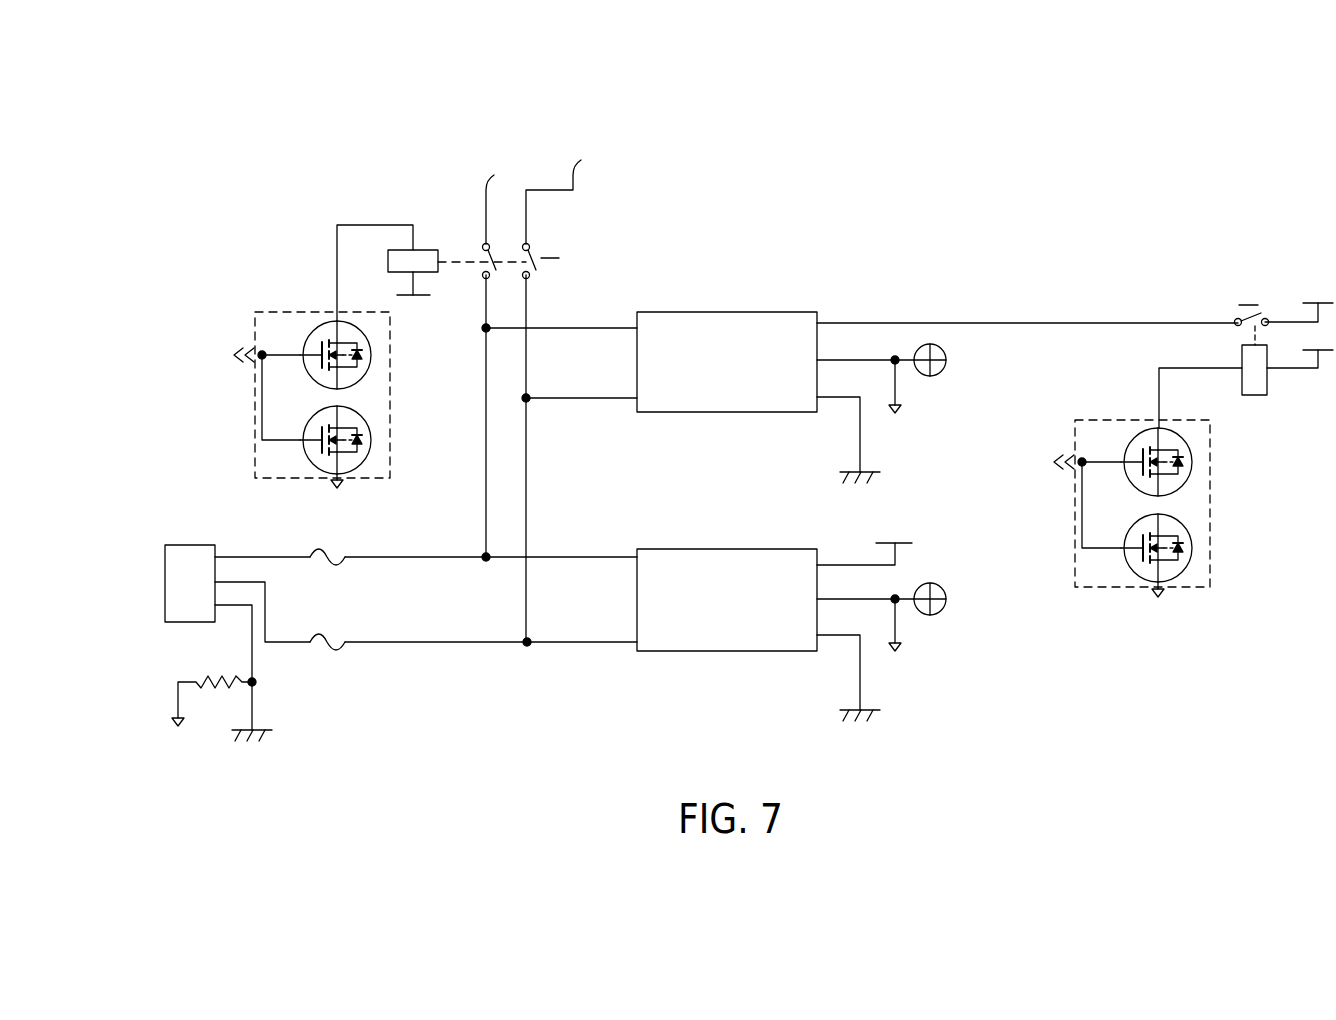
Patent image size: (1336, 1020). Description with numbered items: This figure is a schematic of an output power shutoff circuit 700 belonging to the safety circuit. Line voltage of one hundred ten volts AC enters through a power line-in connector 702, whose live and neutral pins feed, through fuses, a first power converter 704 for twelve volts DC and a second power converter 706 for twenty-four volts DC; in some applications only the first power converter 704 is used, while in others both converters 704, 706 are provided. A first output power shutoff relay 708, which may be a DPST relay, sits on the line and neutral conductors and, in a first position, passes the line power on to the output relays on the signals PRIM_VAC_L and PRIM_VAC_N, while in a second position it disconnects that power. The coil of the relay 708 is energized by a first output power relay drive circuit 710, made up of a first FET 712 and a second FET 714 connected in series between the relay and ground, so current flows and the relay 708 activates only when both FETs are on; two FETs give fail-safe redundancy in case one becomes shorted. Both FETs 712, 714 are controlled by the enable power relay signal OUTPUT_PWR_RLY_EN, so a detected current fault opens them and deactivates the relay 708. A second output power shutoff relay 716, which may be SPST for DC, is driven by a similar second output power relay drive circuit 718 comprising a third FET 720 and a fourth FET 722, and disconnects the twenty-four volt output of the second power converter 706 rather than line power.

The output power shutoff circuit 700 is at (606, 700).
The power line-in connector 702 is at (190, 545).
The first power converter 704 is at (730, 549).
The second power converter 706 is at (720, 312).
The first output power shutoff relay 708 is at (568, 226).
The first output power relay drive circuit 710 is at (255, 327).
The first FET 712 is at (312, 332).
The second FET 714 is at (312, 472).
The second output power shutoff relay 716 is at (1236, 278).
The second output power relay drive circuit 718 is at (1095, 418).
The third FET 720 is at (1140, 431).
The fourth FET 722 is at (1135, 574).